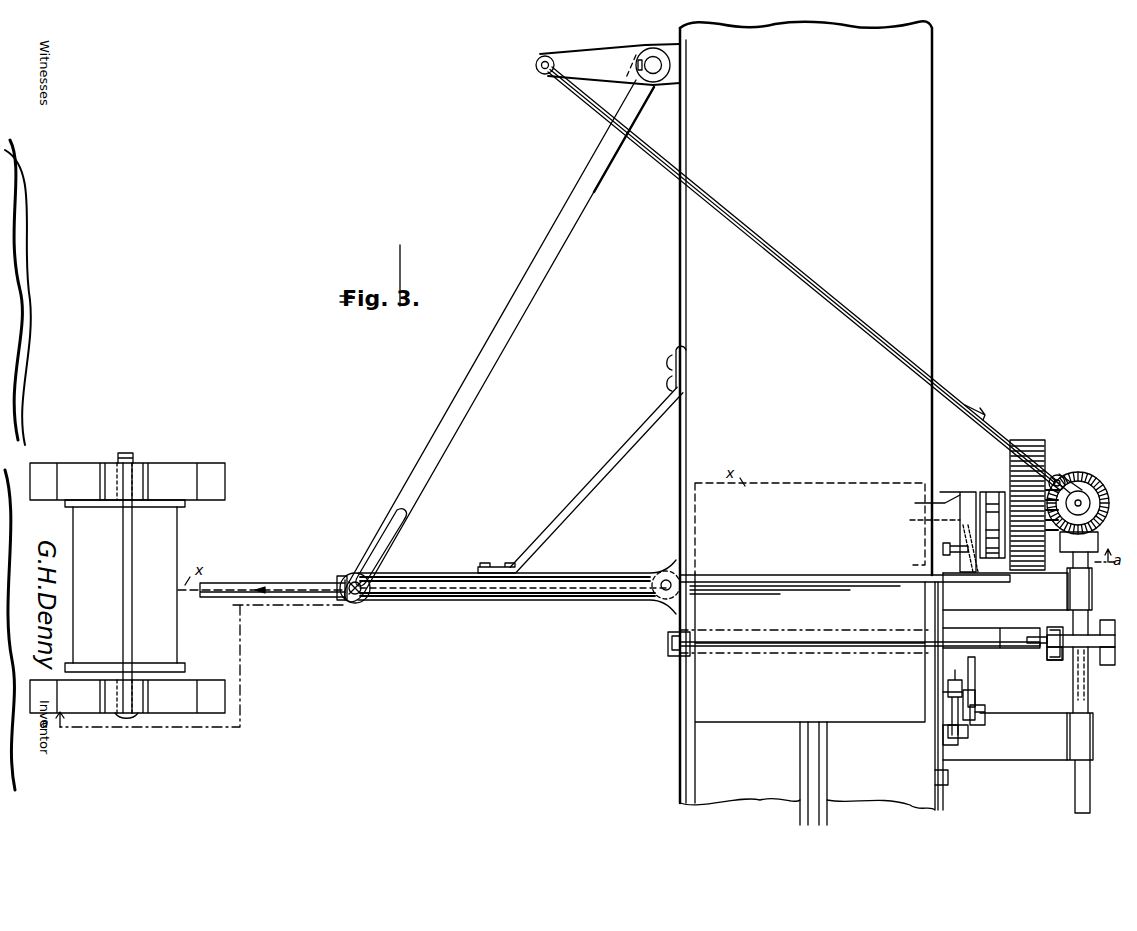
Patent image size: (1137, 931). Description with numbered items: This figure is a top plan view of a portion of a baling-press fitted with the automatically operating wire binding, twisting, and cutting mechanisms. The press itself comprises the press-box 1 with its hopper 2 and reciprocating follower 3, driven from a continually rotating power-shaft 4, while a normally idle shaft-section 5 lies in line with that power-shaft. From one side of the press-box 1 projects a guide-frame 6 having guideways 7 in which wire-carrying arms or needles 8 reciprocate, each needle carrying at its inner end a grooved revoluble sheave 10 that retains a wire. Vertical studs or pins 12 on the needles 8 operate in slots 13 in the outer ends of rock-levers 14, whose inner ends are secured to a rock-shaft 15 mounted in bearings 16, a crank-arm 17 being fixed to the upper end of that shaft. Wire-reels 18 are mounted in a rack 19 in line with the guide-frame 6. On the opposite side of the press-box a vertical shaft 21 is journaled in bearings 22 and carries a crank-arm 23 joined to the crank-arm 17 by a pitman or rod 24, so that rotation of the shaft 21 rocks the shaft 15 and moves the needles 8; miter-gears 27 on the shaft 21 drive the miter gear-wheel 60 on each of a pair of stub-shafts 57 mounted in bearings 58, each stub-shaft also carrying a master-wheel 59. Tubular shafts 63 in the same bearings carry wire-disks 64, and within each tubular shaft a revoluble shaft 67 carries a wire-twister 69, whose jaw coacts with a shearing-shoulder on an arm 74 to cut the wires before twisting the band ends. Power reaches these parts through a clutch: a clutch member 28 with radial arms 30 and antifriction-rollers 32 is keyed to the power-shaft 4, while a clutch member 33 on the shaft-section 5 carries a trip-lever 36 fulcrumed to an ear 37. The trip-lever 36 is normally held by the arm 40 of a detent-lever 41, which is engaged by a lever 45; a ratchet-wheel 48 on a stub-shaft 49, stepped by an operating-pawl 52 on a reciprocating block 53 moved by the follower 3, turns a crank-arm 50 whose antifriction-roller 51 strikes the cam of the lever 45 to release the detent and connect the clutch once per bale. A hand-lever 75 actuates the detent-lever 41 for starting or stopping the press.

The press-box 1 is at (811, 415).
The hopper 2 is at (790, 575).
The reciprocating follower 3 is at (772, 713).
The power-shaft 4 is at (1072, 788).
The shaft-section 5 is at (1096, 632).
The guide-frame 6 is at (684, 575).
The guideways 7 is at (452, 572).
The wire-carrying arms or needles 8 is at (305, 570).
The wire-carrying revoluble sheave 10 is at (660, 570).
The vertical studs or pins 12 is at (352, 604).
The slots 13 is at (415, 525).
The rock-levers 14 is at (540, 268).
The rock-shaft 15 is at (668, 64).
The bearings 16 is at (665, 80).
The crank-arm 17 is at (608, 64).
The wire-reels 18 is at (180, 545).
The rack 19 is at (165, 470).
The vertical shaft 21 is at (1095, 480).
The bearings 22 is at (1098, 545).
The crank-arm 23 is at (1062, 472).
The pitman or rod 24 is at (795, 270).
The miter-gears 27 is at (1088, 455).
The clutch member 28 is at (1068, 692).
The radial arms 30 is at (1047, 648).
The antifriction-roller 32 is at (1048, 660).
The clutch member 33 is at (1108, 618).
The trip-lever 36 is at (1040, 637).
The ear 37 is at (1060, 600).
The arm of detent-lever 40 is at (1010, 632).
The detent-lever 41 is at (675, 635).
The lever 45 is at (977, 665).
The ratchet-wheel 48 is at (954, 694).
The stub-shaft 49 is at (943, 692).
The crank-arm 50 is at (976, 698).
The antifriction-roller 51 is at (985, 712).
The operating-pawl 52 is at (958, 740).
The reciprocating block 53 is at (943, 738).
The stub-shafts 57 is at (993, 496).
The bearings 58 is at (963, 496).
The master-wheel 59 is at (1030, 440).
The miter gear-wheel 60 is at (1071, 564).
The tubular shafts 63 is at (990, 550).
The wire-disk 64 is at (927, 527).
The revoluble shaft 67 is at (943, 550).
The wire-twister 69 is at (955, 585).
The arm 74 is at (927, 500).
The hand-lever 75 is at (665, 660).